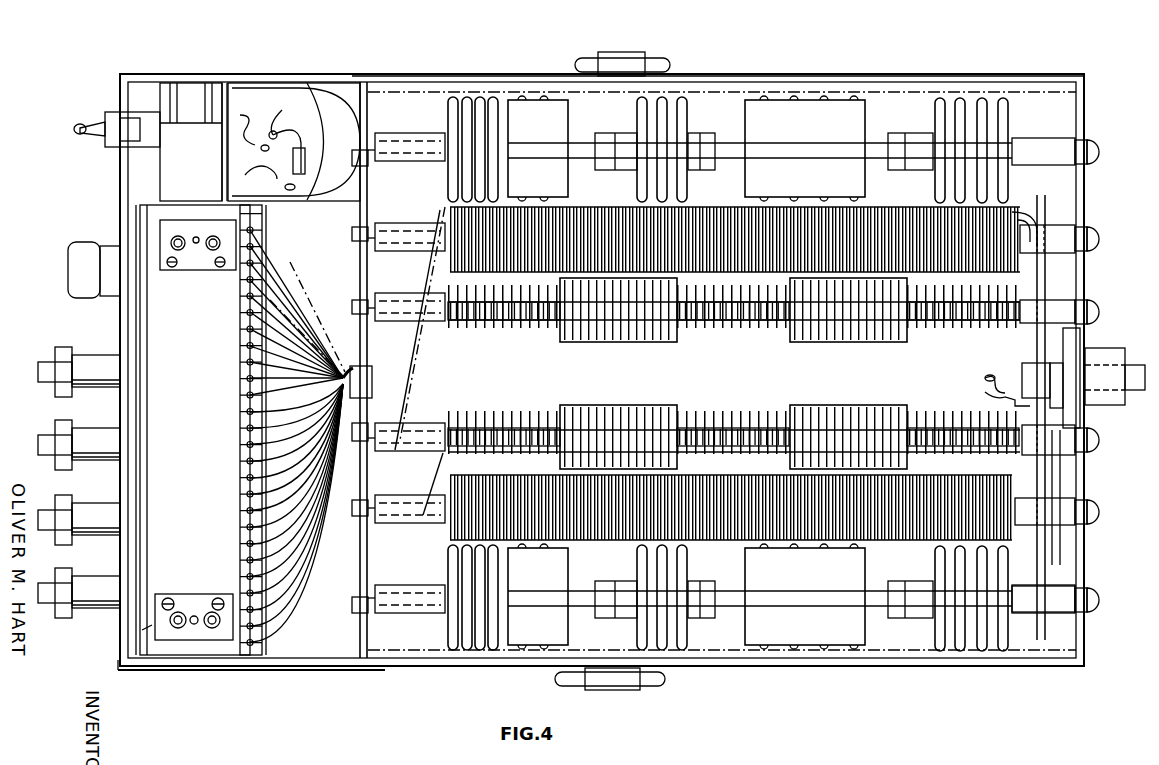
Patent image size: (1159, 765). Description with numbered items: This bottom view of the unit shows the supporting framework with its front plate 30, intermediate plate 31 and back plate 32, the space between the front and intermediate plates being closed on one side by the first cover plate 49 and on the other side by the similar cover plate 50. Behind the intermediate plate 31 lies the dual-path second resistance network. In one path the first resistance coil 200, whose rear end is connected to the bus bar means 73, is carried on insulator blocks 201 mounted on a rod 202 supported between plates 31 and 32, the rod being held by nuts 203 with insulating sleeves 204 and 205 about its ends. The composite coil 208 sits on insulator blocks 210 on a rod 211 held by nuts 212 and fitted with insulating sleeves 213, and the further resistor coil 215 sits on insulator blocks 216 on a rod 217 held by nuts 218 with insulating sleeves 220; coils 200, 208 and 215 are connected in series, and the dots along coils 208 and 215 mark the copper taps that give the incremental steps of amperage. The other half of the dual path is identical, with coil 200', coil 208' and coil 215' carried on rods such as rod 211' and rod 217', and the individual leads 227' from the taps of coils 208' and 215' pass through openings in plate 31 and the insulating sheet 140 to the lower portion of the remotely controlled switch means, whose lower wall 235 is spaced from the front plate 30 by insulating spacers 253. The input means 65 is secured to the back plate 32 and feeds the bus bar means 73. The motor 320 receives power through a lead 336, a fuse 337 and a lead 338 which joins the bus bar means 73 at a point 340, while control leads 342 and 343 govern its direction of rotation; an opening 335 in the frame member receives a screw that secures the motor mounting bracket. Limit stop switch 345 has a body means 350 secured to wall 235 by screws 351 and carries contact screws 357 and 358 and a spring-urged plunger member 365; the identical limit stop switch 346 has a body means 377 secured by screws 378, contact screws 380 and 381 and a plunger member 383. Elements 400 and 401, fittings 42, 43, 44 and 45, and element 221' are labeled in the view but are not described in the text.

The relay assembly 400 is at (115, 94).
The switch 401 is at (82, 127).
The motor 320 is at (250, 92).
The first cover plate 49 is at (291, 81).
The intermediate plate 31 is at (364, 84).
The opening 335 is at (283, 132).
The lead 336 is at (280, 137).
The control lead 342 is at (249, 130).
The control lead 343 is at (253, 179).
The fuse 337 is at (305, 164).
The lead 338 is at (297, 185).
The plunger member 383 is at (196, 238).
The insulating spacers 253 is at (127, 221).
The screw 380 is at (180, 238).
The screw 381 is at (224, 226).
The body means 377 is at (170, 268).
The screws 378 is at (220, 269).
The limit stop switch 346 is at (145, 235).
The front plate 30 is at (120, 333).
The lower wall portion 235 is at (196, 437).
The screw 358 is at (250, 642).
The individual leads 227' is at (347, 424).
The rod 211' is at (339, 223).
The rod 217' is at (347, 321).
The rod 217 is at (354, 394).
The rod 211 is at (355, 462).
The connector 221' is at (349, 536).
The rod 202 is at (352, 145).
The screws 351 is at (220, 600).
The screw 357 is at (175, 632).
The plunger member 365 is at (194, 627).
The body means 350 is at (200, 634).
The limit stop switch 345 is at (150, 632).
The cover plate 50 is at (303, 680).
The insulating sheet 140 is at (369, 122).
The mounting bracket 42 is at (622, 60).
The mounting pin 43 is at (666, 68).
The mounting bracket 44 is at (630, 682).
The mounting pin 45 is at (661, 684).
The insulating sleeve 204 is at (388, 593).
The insulating sleeves 213 is at (390, 522).
The first resistance coil 200' is at (773, 124).
The first resistance coil 200 is at (773, 597).
The insulator blocks 201 is at (564, 562).
The nuts 203 is at (1080, 590).
The insulating sleeve 205 is at (1035, 591).
The coil 208' is at (708, 224).
The coil 208 is at (702, 502).
The insulator blocks 210 is at (1000, 477).
The resistor coil 215' is at (734, 340).
The resistor coil 215 is at (734, 409).
The insulator blocks 216 is at (518, 418).
The insulating sleeves 220 is at (428, 425).
The bus bar means 73 is at (1037, 483).
The input means 65 is at (1100, 326).
The connection point 340 is at (997, 401).
The nuts 218 is at (1081, 458).
The nuts 212 is at (1074, 500).
The back plate 32 is at (1084, 112).